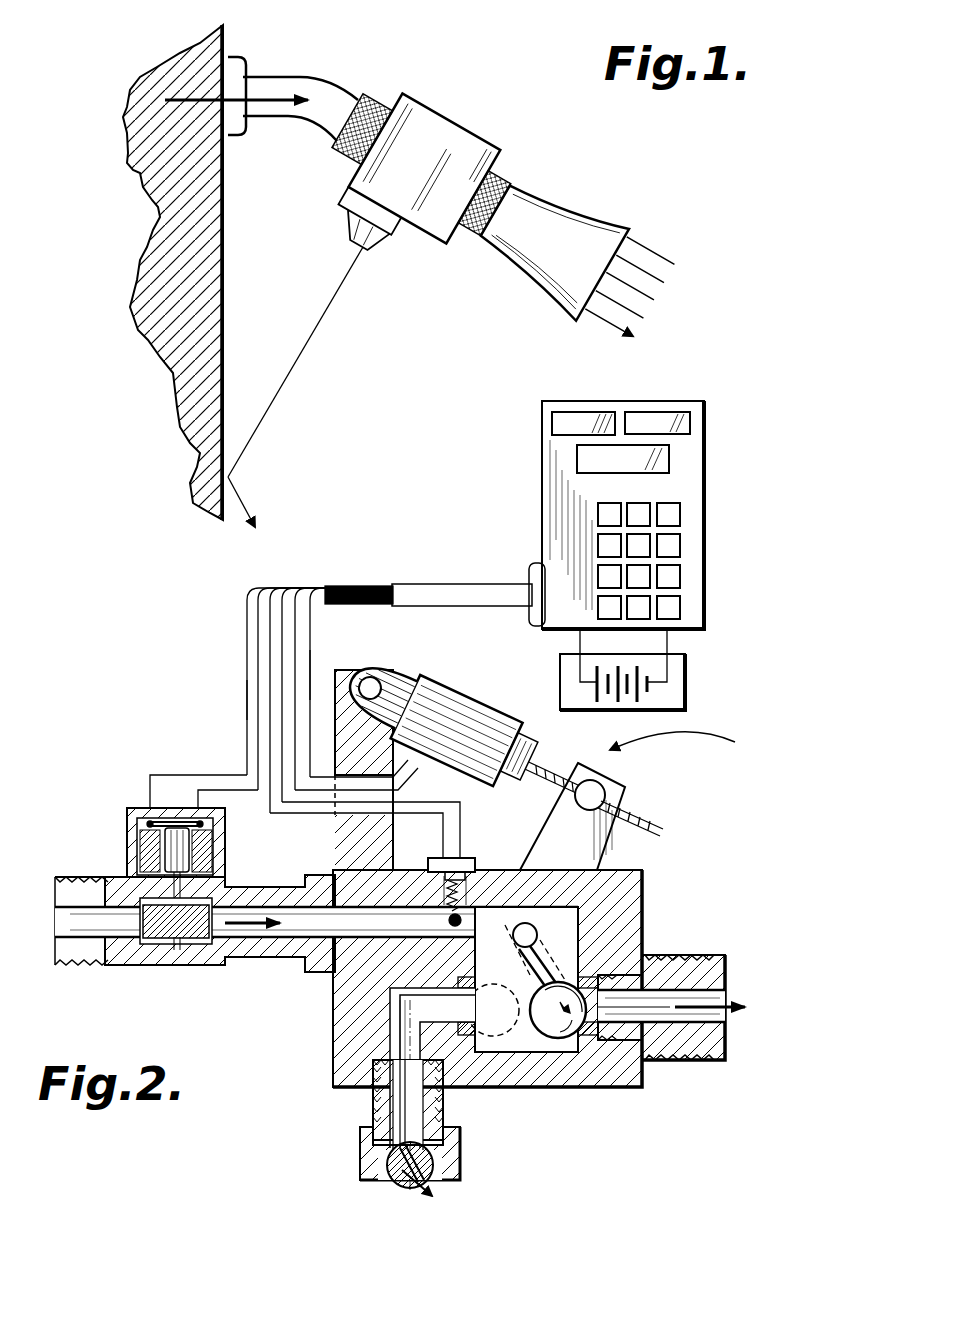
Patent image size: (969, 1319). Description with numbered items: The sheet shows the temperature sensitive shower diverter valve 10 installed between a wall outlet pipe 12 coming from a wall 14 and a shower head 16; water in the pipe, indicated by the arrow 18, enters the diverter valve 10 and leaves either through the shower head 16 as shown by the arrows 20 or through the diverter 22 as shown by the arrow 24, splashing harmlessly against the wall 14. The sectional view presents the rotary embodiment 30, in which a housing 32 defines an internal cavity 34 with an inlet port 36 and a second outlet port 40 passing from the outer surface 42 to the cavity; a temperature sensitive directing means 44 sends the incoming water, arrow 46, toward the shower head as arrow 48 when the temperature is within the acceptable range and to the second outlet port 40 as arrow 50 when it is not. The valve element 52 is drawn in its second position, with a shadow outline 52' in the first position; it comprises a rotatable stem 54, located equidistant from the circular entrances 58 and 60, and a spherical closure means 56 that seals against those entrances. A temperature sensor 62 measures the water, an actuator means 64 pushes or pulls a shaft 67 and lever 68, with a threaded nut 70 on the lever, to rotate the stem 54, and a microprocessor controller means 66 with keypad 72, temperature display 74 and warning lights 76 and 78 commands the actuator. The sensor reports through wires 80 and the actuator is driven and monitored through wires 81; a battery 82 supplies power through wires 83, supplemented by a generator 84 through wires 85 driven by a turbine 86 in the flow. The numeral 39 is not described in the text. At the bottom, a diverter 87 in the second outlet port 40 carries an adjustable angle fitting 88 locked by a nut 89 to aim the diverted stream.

In FIG. 1, the temperature sensitive diverter valve 10 is at (465, 128).
In FIG. 1, the wall outlet pipe 12 is at (346, 100).
In FIG. 1, the wall 14 is at (222, 268).
In FIG. 1, the shower head 16 is at (601, 215).
In FIG. 1, the arrow 18 is at (268, 95).
In FIG. 1, the arrows 20 is at (659, 272).
In FIG. 1, the diverter 22 is at (380, 250).
In FIG. 1, the arrow 24 is at (300, 358).
In FIG. 2, the rotary embodiment 30 is at (253, 1070).
In FIG. 2, the housing 32 is at (618, 1045).
In FIG. 2, the internal cavity 34 is at (495, 1055).
In FIG. 2, the inlet port 36 is at (300, 962).
In FIG. 2, the outlet thread 39 is at (665, 1062).
In FIG. 2, the second outlet port 40 is at (390, 995).
In FIG. 2, the outer surface 42 is at (660, 958).
In FIG. 2, the temperature sensitive directing means 44 is at (689, 741).
In FIG. 2, the arrow 46 is at (240, 950).
In FIG. 2, the arrow 48 is at (728, 1012).
In FIG. 2, the arrow 50 is at (434, 1198).
In FIG. 2, the valve element 52 is at (565, 1067).
In FIG. 2, the valve element shadow outline 52' is at (516, 1046).
In FIG. 2, the rotatable stem 54 is at (538, 937).
In FIG. 2, the closure means 56 is at (560, 956).
In FIG. 2, the circular entrance 58 is at (638, 1062).
In FIG. 2, the circular entrance 60 is at (393, 1035).
In FIG. 2, the temperature sensor 62 is at (488, 875).
In FIG. 2, the actuator means 64 is at (456, 712).
In FIG. 2, the controller means 66 is at (542, 470).
In FIG. 2, the shaft 67 is at (662, 831).
In FIG. 2, the lever 68 is at (610, 778).
In FIG. 2, the threaded nut 70 is at (600, 797).
In FIG. 2, the keypad 72 is at (680, 545).
In FIG. 2, the temperature display 74 is at (672, 460).
In FIG. 2, the warning light 76 is at (570, 412).
In FIG. 2, the warning light 78 is at (672, 412).
In FIG. 2, the wires 80 is at (270, 650).
In FIG. 2, the wires 81 is at (310, 660).
In FIG. 2, the battery 82 is at (686, 695).
In FIG. 2, the wires 83 is at (668, 642).
In FIG. 2, the generator 84 is at (127, 833).
In FIG. 2, the wires 85 is at (247, 692).
In FIG. 2, the turbine 86 is at (130, 922).
In FIG. 2, the diverter 87 is at (372, 1130).
In FIG. 2, the adjustable angle fitting 88 is at (385, 1178).
In FIG. 2, the nut 89 is at (360, 1150).